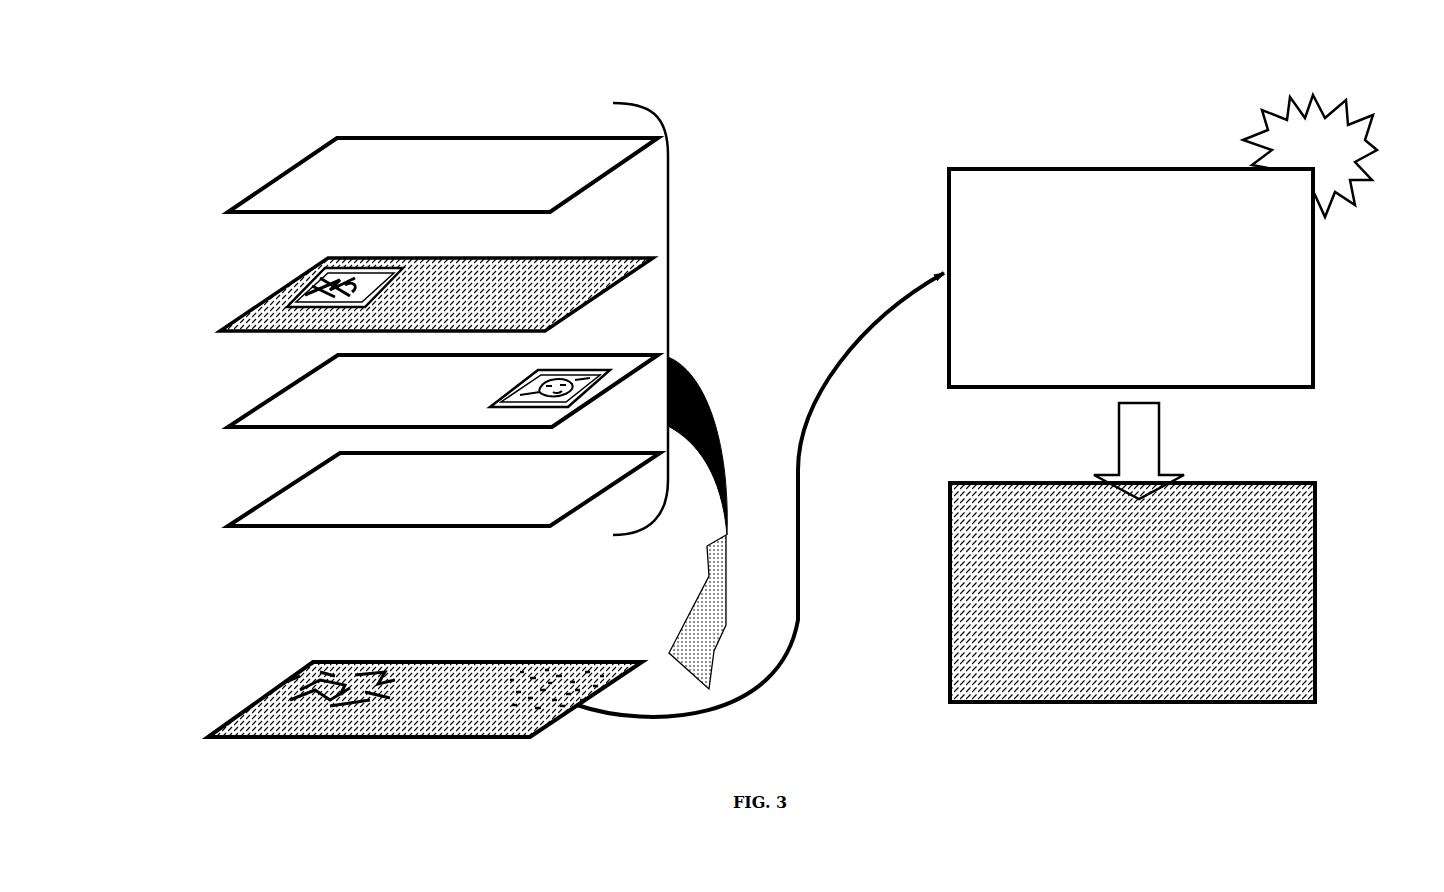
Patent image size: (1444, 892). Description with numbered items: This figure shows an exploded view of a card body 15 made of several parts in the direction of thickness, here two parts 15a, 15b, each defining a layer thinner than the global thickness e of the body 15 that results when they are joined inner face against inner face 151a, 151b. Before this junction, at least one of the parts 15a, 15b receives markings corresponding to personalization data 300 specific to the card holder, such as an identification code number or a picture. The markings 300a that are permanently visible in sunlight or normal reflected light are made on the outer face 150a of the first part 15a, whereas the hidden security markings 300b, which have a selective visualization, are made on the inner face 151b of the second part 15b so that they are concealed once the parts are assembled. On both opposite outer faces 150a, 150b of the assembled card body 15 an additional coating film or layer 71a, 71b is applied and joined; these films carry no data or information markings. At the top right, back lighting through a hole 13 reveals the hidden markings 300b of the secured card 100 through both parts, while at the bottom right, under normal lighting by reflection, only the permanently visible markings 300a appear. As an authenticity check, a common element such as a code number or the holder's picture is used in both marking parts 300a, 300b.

The additional coating film 71a is at (393, 157).
The additional coating film 71b is at (478, 492).
The outer face of first part 150a is at (257, 310).
The outer face of second part 150b is at (272, 430).
The inner face of first part 151a is at (402, 344).
The inner face of second part 151b is at (257, 416).
The first part of card body 15a is at (612, 255).
The second part of card body 15b is at (632, 357).
The card body 15 is at (587, 302).
The personalization data markings 300 is at (303, 307).
The permanently visible markings 300a is at (413, 283).
The hidden security markings 300b is at (340, 415).
The hole 13 is at (1333, 142).
The secured card 100 is at (1283, 360).
The global thickness e is at (255, 712).